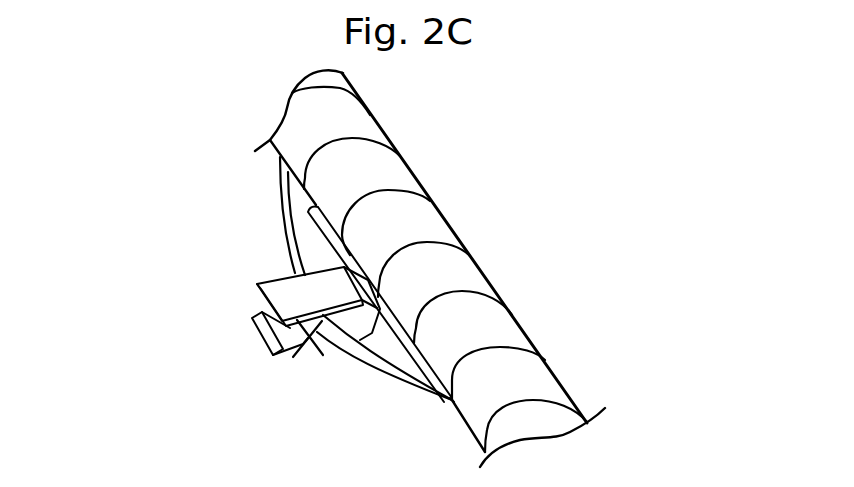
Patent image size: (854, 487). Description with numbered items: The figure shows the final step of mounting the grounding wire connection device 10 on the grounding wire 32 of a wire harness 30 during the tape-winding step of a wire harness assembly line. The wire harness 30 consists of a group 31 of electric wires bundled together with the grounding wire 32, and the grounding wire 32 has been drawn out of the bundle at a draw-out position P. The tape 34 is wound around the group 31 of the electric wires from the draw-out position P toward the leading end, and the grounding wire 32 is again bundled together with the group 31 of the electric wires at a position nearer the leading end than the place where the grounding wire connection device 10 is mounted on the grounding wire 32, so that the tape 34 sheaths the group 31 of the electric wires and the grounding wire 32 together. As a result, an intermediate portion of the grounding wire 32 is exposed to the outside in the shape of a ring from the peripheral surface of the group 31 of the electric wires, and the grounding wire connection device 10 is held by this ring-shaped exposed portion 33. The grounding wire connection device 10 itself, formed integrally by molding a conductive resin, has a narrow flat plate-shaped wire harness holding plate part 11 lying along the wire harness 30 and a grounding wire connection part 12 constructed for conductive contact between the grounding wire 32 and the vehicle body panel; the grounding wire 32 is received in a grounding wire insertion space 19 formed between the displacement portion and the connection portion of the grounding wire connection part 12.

The grounding wire connection device 10 is at (243, 341).
The wire harness holding plate part 11 is at (305, 230).
The grounding wire connection part 12 is at (273, 281).
The grounding wire insertion space 19 is at (330, 340).
The wire harness 30 is at (428, 183).
The group of electric wires 31 is at (364, 128).
The grounding wire 32 is at (360, 363).
The ring-shaped exposed portion 33 is at (397, 388).
The tape 34 is at (512, 316).
The draw-out position P is at (452, 401).